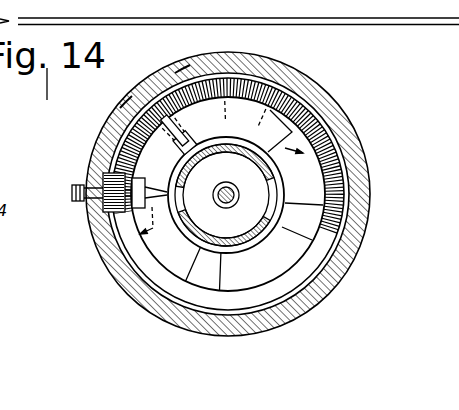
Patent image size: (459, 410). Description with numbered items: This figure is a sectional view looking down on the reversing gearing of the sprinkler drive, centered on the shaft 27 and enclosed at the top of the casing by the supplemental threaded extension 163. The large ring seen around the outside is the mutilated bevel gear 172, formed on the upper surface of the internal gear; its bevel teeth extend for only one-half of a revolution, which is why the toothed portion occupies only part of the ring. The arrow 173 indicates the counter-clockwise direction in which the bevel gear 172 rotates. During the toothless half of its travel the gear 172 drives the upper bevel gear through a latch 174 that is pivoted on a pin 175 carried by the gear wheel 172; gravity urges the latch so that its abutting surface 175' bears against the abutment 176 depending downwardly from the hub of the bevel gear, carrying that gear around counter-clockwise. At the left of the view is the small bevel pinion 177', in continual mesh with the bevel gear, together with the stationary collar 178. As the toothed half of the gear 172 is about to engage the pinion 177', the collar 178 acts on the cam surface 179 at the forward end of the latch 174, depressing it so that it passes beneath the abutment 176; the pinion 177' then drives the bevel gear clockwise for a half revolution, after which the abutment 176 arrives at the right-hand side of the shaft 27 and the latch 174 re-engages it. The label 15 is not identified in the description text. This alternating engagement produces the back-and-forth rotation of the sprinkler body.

The sector segment 15 is at (226, 180).
The shaft 27 is at (214, 190).
The supplemental threaded extension 163 is at (365, 163).
The mutilated bevel gear 172 is at (322, 133).
The arrow 173 is at (369, 279).
The latch 174 is at (200, 120).
The pin 175 is at (164, 64).
The abutting surface 175' is at (107, 96).
The abutment 176 is at (157, 160).
The bevel pinion 177' is at (77, 204).
The stationary collar 178 is at (133, 213).
The cam surface 179 is at (153, 157).